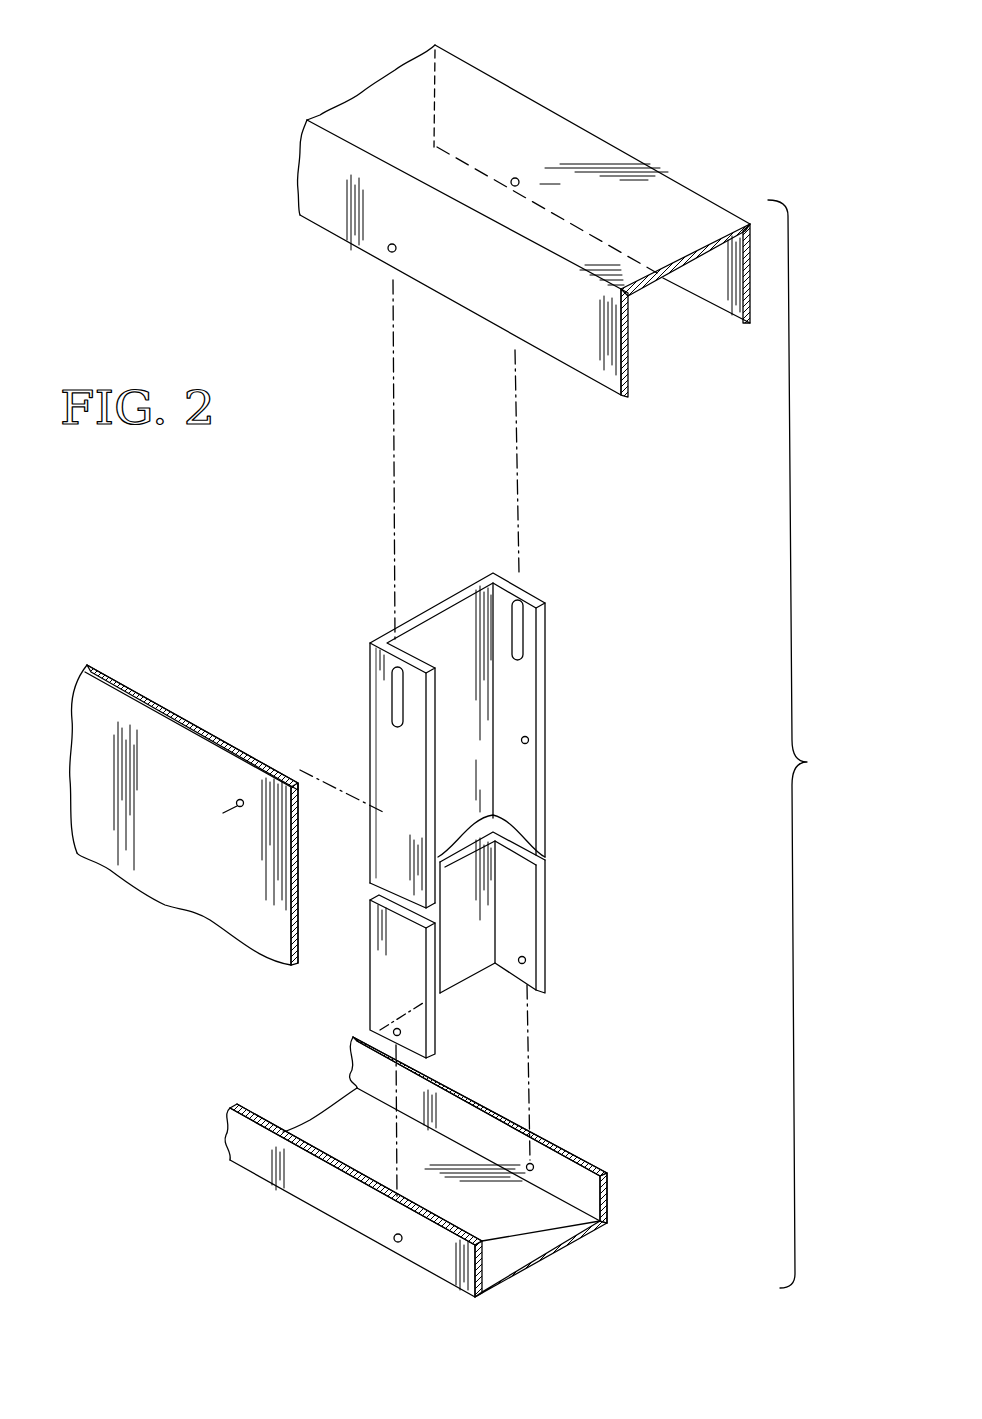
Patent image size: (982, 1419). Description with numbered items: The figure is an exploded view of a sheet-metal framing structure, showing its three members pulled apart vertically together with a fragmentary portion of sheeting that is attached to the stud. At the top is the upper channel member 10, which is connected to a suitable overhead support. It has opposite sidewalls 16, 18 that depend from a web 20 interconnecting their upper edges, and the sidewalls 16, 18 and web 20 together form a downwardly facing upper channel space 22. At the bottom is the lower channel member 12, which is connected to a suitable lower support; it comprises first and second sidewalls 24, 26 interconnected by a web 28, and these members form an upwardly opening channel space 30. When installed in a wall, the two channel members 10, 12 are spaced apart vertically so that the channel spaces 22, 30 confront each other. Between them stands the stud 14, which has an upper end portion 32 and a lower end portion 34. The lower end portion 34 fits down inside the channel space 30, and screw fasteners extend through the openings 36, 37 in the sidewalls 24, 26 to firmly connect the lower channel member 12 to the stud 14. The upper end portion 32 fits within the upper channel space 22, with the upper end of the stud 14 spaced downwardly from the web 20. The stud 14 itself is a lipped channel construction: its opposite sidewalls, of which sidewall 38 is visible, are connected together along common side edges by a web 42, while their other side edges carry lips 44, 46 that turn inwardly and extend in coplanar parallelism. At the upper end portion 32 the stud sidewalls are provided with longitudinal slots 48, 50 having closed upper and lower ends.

The upper channel member 10 is at (565, 152).
The lower channel member 12 is at (356, 1213).
The stud 14 is at (572, 742).
The sidewall 16 is at (577, 350).
The sidewall 18 is at (725, 297).
The web 20 is at (678, 203).
The upper channel space 22 is at (677, 340).
The first sidewall 24 is at (443, 1263).
The second sidewall 26 is at (577, 1183).
The web 28 is at (567, 1230).
The channel space 30 is at (343, 1120).
The upper end portion 32 is at (467, 575).
The lower end portion 34 is at (490, 984).
The opening 36 is at (390, 1250).
The opening 37 is at (536, 1164).
The sidewall 38 is at (398, 972).
The web 42 is at (450, 745).
The lip 44 is at (437, 1030).
The lip 46 is at (547, 962).
The longitudinal slot 48 is at (397, 690).
The longitudinal slot 50 is at (512, 658).